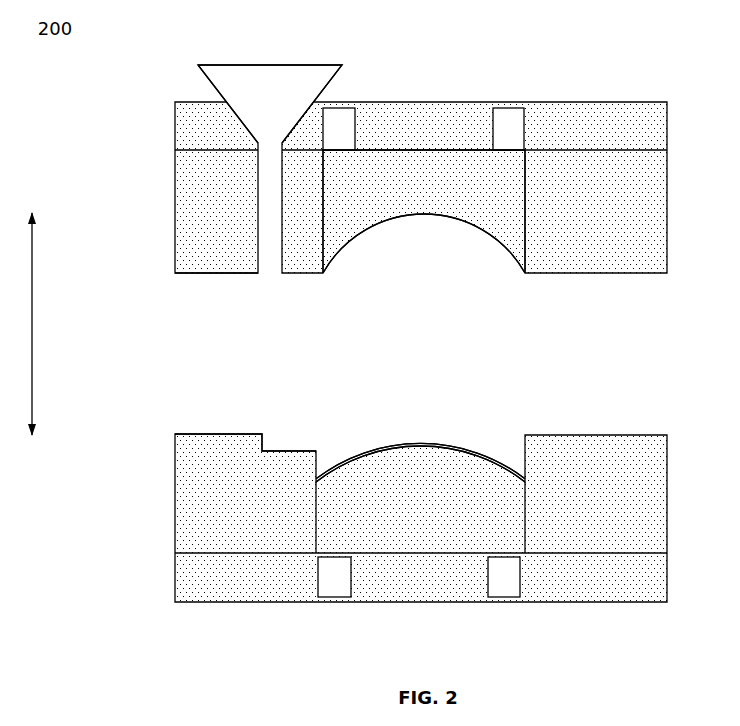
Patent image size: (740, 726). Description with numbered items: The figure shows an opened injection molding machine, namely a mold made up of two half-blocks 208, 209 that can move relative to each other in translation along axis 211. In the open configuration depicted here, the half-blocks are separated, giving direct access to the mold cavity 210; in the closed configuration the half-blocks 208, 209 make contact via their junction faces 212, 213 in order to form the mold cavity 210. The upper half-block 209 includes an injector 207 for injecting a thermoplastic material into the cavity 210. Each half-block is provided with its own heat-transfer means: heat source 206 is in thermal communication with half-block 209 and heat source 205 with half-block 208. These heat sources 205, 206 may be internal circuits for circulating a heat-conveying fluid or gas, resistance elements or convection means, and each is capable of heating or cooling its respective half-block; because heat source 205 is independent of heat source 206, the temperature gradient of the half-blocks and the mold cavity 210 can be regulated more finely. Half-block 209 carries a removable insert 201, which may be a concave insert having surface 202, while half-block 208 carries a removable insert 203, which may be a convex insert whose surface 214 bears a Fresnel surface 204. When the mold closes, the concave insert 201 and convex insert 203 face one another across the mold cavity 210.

The removable insert 201 is at (382, 210).
The surface 202 is at (433, 217).
The removable insert 203 is at (365, 500).
The Fresnel surface 204 is at (435, 445).
The heat source 205 is at (345, 583).
The heat source 206 is at (497, 122).
The injector 207 is at (270, 92).
The half-block 208 is at (386, 518).
The half-block 209 is at (386, 169).
The mold cavity 210 is at (424, 318).
The axis 211 is at (57, 324).
The junction face 212 is at (236, 276).
The junction face 213 is at (236, 432).
The surface 214 is at (484, 457).